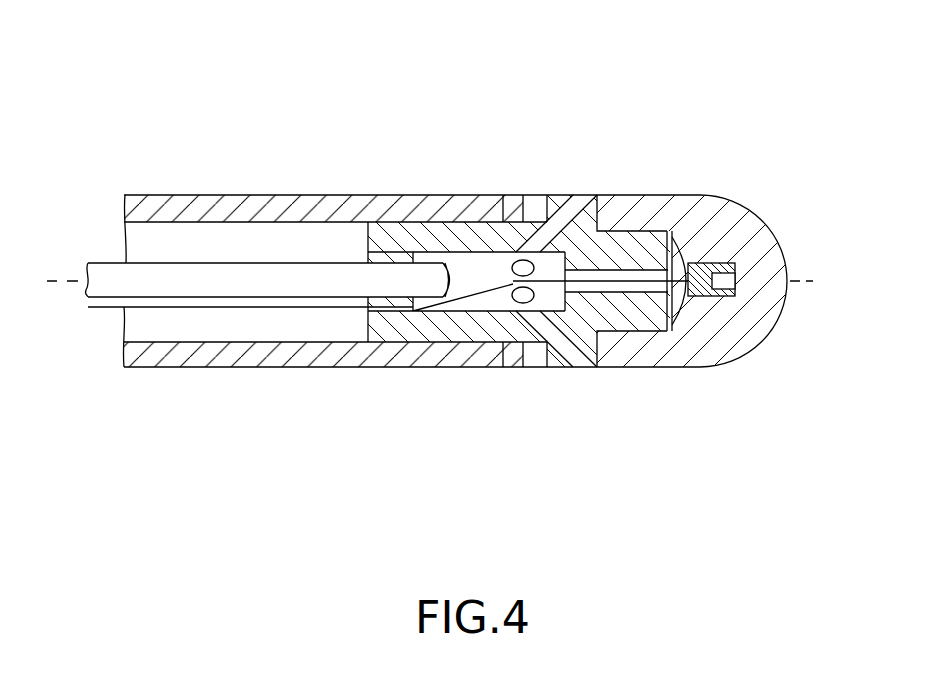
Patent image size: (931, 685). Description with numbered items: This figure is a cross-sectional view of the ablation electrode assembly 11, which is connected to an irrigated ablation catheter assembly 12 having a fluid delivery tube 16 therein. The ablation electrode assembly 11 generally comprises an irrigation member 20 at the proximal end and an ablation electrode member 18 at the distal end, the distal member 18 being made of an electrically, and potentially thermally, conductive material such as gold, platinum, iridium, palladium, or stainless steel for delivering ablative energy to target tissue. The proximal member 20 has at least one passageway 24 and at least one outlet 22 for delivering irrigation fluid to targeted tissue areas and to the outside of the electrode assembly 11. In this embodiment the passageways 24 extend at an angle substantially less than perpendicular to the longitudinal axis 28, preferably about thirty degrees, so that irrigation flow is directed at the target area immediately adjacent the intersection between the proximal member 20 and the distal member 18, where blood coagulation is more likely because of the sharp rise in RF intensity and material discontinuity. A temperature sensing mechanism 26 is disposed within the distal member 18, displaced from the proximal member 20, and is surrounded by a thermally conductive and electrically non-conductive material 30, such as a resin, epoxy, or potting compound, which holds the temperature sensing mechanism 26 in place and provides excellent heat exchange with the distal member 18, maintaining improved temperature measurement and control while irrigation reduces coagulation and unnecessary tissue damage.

The ablation electrode assembly 11 is at (577, 255).
The irrigated ablation catheter assembly 12 is at (349, 141).
The fluid delivery tube 16 is at (93, 263).
The ablation electrode member 18 is at (737, 173).
The irrigation member 20 is at (501, 196).
The outlet 22 is at (617, 162).
The passageway 24 is at (583, 203).
The temperature sensing mechanism 26 is at (730, 300).
The longitudinal axis 28 is at (816, 281).
The thermally conductive and electrically non-conductive material 30 is at (700, 297).